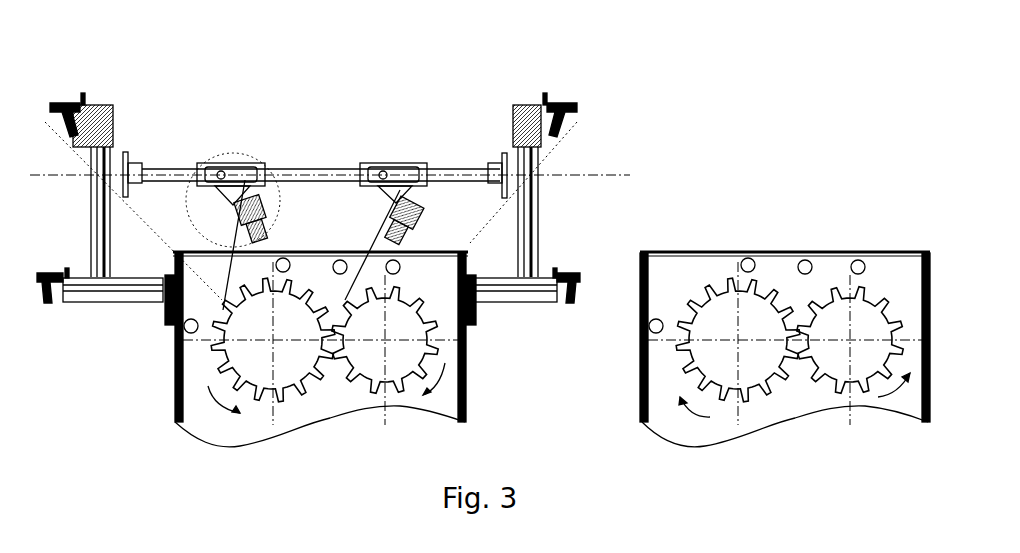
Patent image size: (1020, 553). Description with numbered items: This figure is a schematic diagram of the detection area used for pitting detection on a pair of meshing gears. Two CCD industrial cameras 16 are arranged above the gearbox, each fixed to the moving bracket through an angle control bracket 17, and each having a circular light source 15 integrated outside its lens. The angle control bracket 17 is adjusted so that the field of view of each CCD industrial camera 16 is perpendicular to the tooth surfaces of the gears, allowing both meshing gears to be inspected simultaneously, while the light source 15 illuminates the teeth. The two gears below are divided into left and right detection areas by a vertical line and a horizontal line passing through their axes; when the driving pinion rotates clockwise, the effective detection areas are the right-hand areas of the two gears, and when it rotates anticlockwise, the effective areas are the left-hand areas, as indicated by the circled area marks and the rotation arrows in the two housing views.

The light source 15 is at (165, 145).
The CCD industrial camera 16 is at (277, 125).
The angle control bracket 17 is at (429, 146).